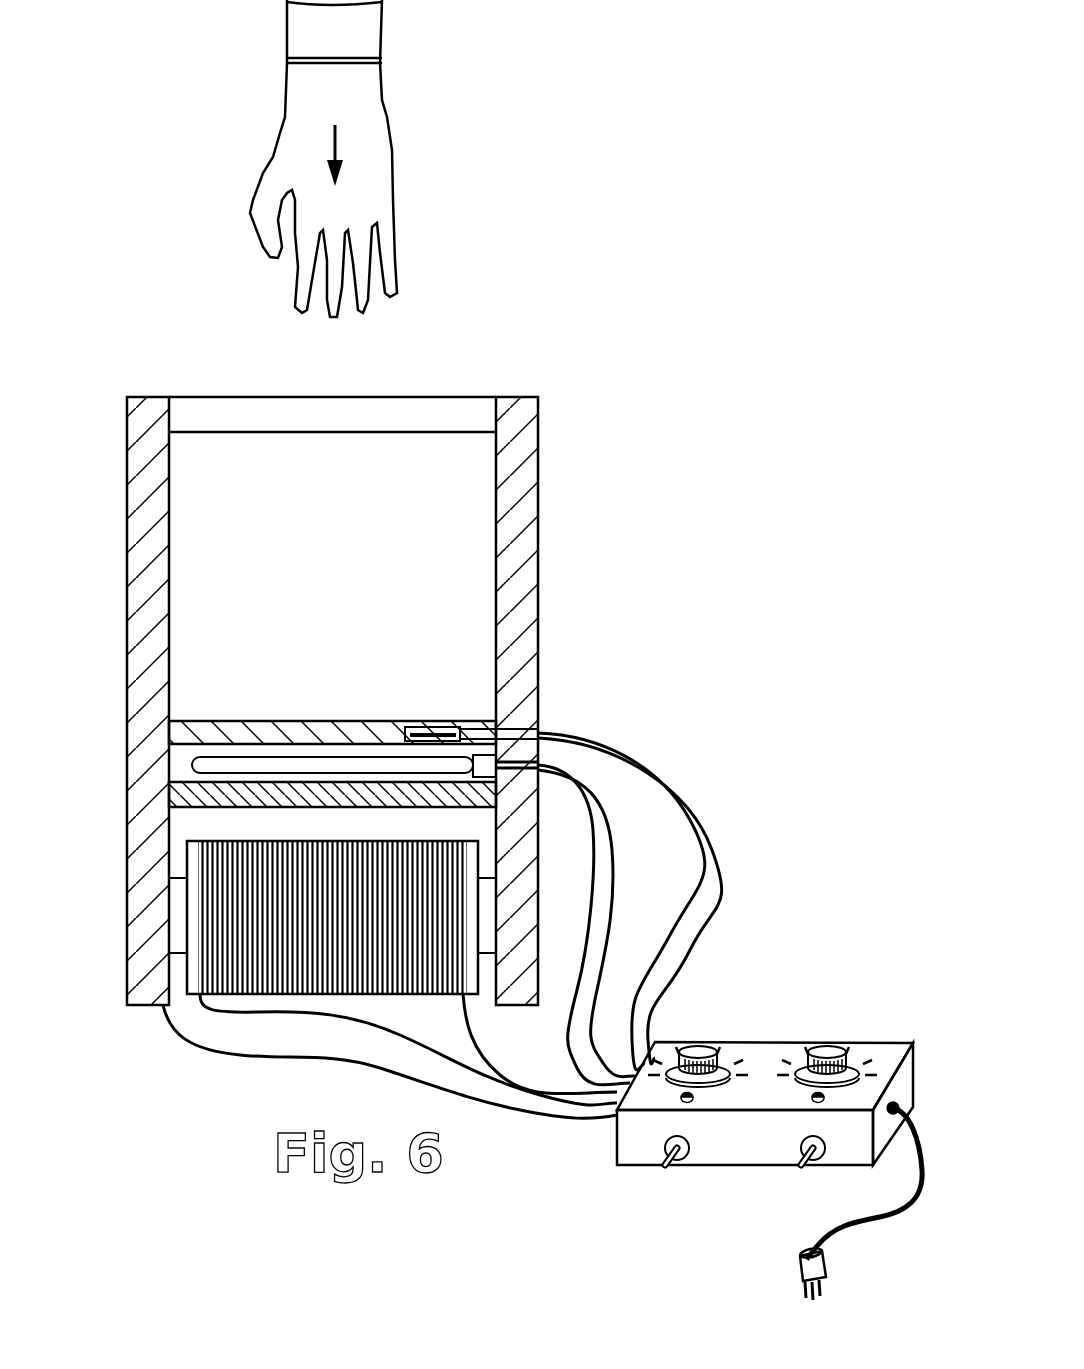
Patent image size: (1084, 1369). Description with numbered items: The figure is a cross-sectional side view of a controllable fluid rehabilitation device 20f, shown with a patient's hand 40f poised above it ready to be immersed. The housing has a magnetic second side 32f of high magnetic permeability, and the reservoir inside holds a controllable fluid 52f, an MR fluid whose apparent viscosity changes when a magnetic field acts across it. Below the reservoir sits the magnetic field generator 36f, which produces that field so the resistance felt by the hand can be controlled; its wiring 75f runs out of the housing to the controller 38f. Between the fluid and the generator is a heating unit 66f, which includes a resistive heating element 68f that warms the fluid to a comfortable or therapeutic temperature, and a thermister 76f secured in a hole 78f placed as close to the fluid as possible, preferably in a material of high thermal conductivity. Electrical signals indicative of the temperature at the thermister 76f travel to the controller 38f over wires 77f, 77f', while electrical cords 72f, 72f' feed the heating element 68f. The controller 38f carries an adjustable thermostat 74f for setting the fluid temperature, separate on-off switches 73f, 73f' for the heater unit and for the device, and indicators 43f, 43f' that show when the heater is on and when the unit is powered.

The hand 40f is at (352, 101).
The controllable fluid rehabilitation device 20f is at (484, 389).
The second side 32f is at (540, 422).
The controllable fluid 52f is at (340, 609).
The heating element 68f is at (342, 733).
The heating unit 66f is at (182, 756).
The thermister 76f is at (486, 727).
The hole 78f is at (524, 729).
The wire 77f is at (651, 901).
The wire 77f' is at (679, 901).
The electrical cord 72f is at (611, 925).
The electrical cord 72f' is at (614, 923).
The magnetic field generator 36f is at (250, 998).
The coil wires 75f is at (488, 1103).
The controller 38f is at (760, 1027).
The adjustable thermostat 74f is at (827, 1050).
The indicator 43f is at (762, 1152).
The indicator 43f' is at (614, 1158).
The on-off switch 73f is at (785, 1195).
The on-off switch 73f' is at (645, 1195).